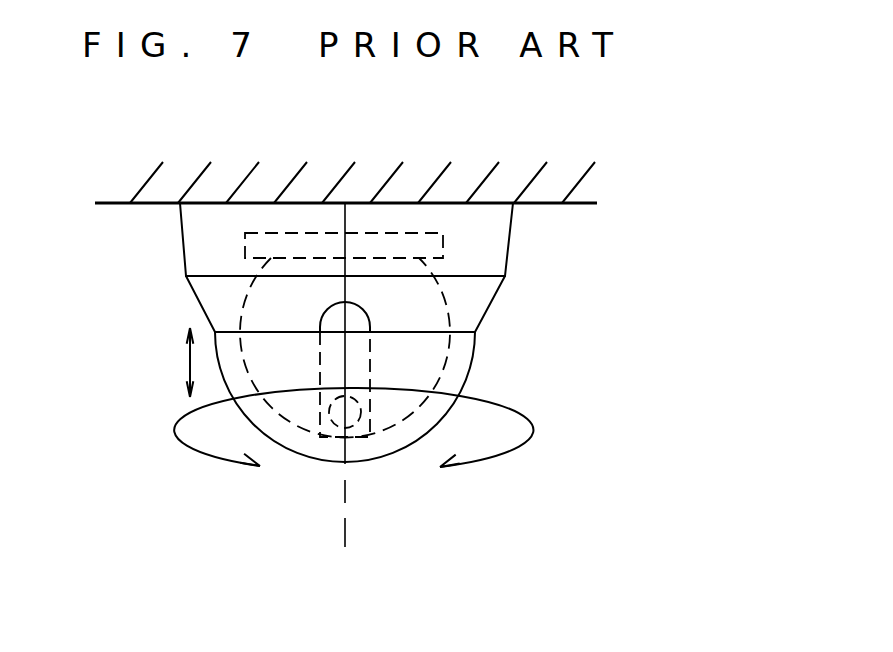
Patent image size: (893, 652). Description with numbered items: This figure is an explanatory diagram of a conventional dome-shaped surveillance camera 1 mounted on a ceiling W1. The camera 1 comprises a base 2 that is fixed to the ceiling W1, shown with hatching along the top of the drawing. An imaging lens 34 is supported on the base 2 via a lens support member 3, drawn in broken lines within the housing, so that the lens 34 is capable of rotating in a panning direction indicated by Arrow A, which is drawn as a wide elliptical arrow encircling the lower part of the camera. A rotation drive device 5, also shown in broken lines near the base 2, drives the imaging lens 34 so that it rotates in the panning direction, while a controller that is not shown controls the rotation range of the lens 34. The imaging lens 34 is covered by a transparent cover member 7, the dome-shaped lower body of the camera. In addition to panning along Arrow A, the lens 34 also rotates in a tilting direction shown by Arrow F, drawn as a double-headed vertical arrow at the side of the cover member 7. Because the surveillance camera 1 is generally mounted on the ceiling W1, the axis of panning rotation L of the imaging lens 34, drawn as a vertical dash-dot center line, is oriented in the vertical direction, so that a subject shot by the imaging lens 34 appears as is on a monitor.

The dome-shaped surveillance camera 1 is at (425, 492).
The base 2 is at (180, 237).
The lens support member 3 is at (245, 303).
The rotation drive device 5 is at (443, 247).
The transparent cover member 7 is at (475, 352).
The imaging lens 34 is at (343, 413).
The panning direction A is at (528, 418).
The tilting direction F is at (178, 362).
The axis of panning rotation L is at (345, 520).
The ceiling W1 is at (543, 203).